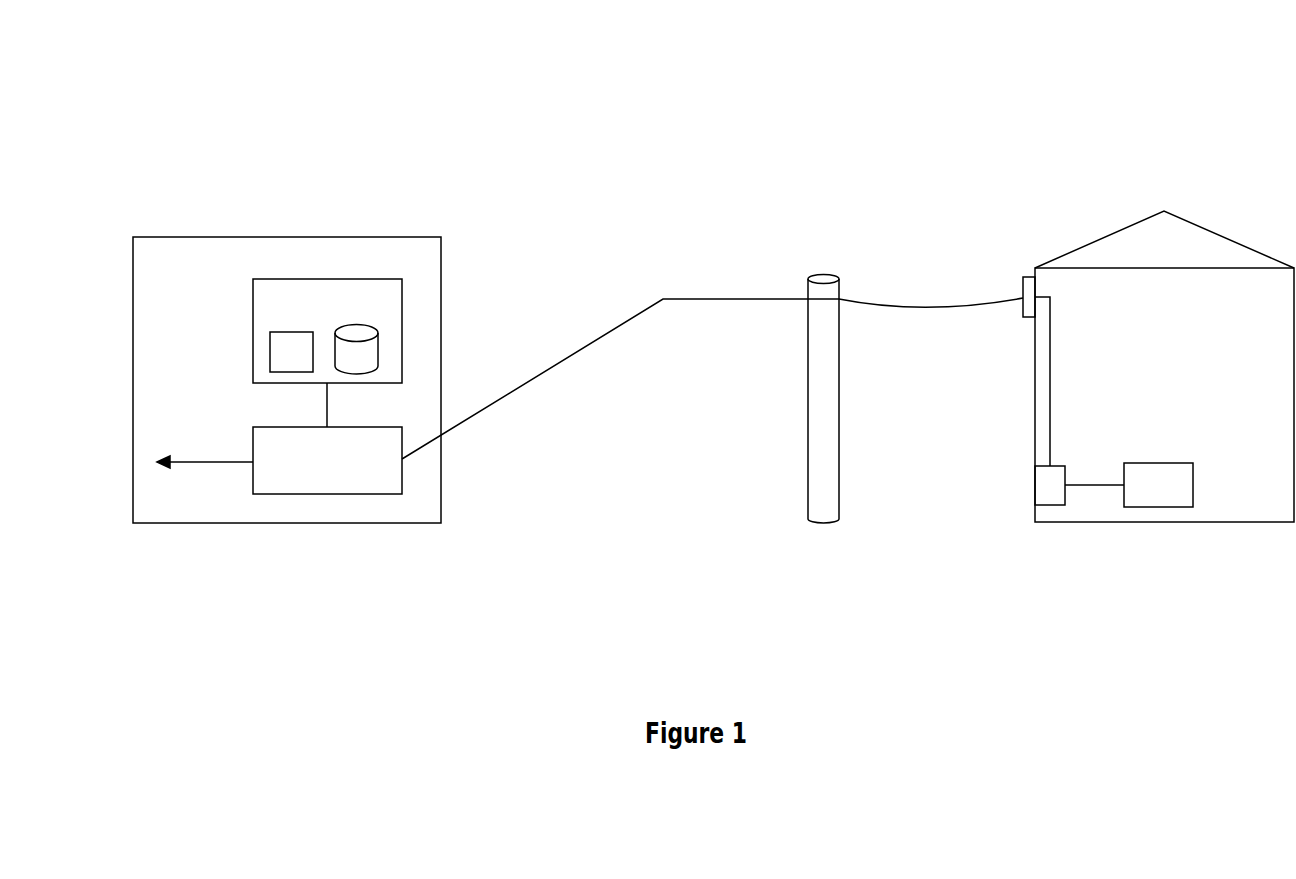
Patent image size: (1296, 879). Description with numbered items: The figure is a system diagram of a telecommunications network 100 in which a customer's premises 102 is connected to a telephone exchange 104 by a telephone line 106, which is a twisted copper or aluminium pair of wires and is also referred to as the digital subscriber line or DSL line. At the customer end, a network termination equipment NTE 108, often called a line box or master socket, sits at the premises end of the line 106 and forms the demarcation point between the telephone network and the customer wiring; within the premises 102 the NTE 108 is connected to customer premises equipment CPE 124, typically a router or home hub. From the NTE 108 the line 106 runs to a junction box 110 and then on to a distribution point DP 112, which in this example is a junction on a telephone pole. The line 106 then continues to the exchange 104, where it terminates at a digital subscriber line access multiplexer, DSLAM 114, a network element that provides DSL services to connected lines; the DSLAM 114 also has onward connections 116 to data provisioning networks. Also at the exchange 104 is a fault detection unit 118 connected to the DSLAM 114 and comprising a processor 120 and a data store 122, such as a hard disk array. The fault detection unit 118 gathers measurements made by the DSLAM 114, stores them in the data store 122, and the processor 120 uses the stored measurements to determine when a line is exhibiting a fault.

The telecommunications network 100 is at (707, 28).
The customer's premises 102 is at (1111, 223).
The telephone exchange 104 is at (167, 234).
The telephone line 106 is at (710, 293).
The network termination equipment (NTE) 108 is at (1030, 480).
The junction box 110 is at (1023, 278).
The distribution point (DP) 112 is at (802, 480).
The digital subscriber line access multiplexer (DSLAM) 114 is at (372, 423).
The onward connections 116 is at (205, 449).
The fault detection unit 118 is at (333, 275).
The processor 120 is at (287, 330).
The data store 122 is at (350, 325).
The customer premises equipment (CPE) 124 is at (1141, 461).